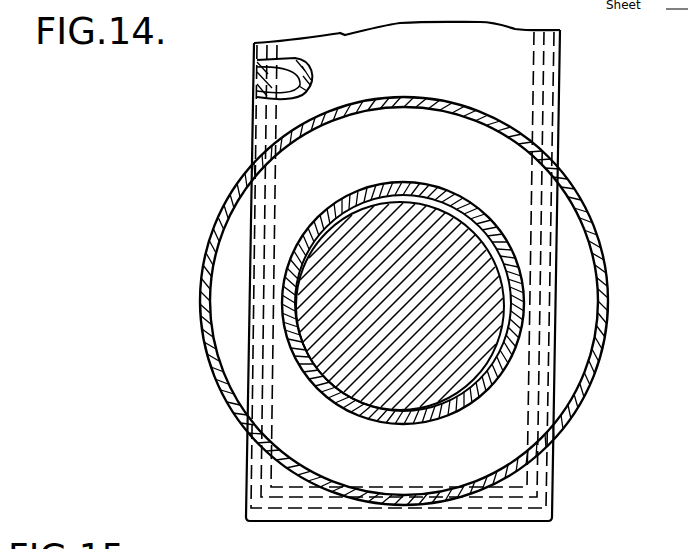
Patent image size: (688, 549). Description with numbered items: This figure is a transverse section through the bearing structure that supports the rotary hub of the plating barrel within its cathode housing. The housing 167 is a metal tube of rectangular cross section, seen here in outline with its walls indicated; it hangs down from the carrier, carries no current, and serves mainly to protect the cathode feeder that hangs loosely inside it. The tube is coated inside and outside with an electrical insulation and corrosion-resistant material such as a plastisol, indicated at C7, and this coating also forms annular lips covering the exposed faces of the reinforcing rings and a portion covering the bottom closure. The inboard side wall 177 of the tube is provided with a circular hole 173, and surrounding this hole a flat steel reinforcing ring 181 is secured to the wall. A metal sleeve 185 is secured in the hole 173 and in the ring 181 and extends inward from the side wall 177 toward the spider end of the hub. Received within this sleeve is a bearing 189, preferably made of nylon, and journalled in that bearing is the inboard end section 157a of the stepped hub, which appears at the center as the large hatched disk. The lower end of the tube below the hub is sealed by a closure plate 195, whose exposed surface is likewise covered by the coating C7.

The housing 167 is at (566, 52).
The inboard side wall 177 is at (343, 33).
The closure plate 195 is at (470, 516).
The coating C7 is at (312, 78).
The reinforcing ring 181 is at (550, 172).
The circular hole 173 is at (455, 409).
The sleeve 185 is at (455, 196).
The bearing 189 is at (397, 197).
The inboard end section 157a is at (392, 382).